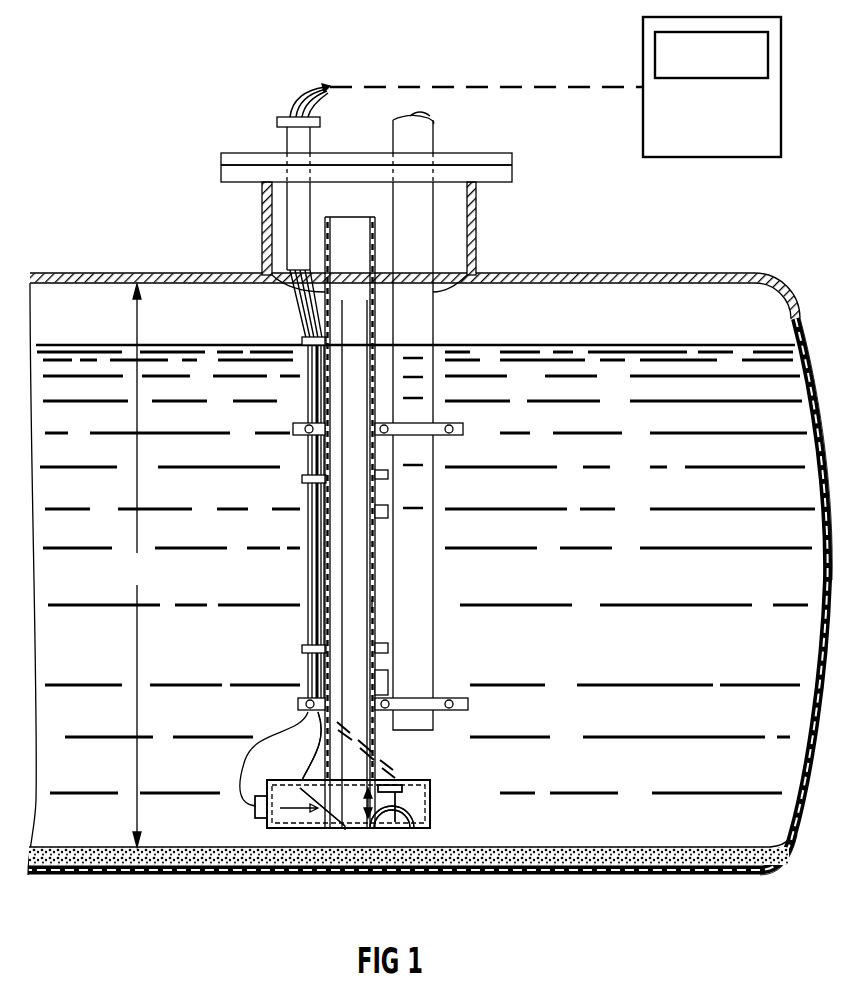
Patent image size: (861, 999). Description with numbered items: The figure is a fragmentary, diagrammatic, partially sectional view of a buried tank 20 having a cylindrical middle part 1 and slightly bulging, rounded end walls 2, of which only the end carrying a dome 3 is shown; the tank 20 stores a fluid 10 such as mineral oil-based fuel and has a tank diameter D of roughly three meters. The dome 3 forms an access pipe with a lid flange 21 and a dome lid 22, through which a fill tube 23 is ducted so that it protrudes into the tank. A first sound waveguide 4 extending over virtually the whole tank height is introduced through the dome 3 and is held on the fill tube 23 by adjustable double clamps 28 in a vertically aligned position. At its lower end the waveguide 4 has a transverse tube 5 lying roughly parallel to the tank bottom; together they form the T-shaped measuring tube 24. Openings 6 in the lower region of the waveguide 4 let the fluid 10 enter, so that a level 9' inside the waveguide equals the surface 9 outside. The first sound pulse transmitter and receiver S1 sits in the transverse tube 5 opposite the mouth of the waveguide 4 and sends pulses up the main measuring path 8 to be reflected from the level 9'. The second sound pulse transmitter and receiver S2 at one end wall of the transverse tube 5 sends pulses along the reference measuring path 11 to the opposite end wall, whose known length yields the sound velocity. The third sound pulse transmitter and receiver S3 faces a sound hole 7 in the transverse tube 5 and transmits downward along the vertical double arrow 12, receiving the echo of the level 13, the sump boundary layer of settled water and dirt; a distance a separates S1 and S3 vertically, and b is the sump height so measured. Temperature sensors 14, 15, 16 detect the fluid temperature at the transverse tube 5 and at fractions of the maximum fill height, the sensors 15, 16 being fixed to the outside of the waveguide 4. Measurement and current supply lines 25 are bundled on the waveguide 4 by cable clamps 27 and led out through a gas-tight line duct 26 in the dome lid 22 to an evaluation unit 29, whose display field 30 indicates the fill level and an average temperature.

The cylindrical middle part 1 is at (172, 276).
The end wall 2 is at (805, 338).
The dome 3 is at (477, 229).
The first sound waveguide 4 is at (385, 320).
The transverse tube 5 is at (272, 792).
The openings 6 is at (322, 781).
The sound hole 7 is at (390, 830).
The main measuring path 8 is at (344, 493).
The level 9 is at (415, 324).
The level 9' is at (346, 324).
The fluid 10 is at (584, 590).
The reference measuring path 11 is at (305, 830).
The vertical double arrow 12 is at (412, 832).
The level 13 is at (578, 866).
The temperature sensor 14 is at (262, 808).
The temperature sensor 15 is at (389, 680).
The temperature sensor 16 is at (389, 512).
The tank 20 is at (781, 866).
The lid flange 21 is at (505, 176).
The dome lid 22 is at (495, 153).
The fill tube 23 is at (432, 122).
The measuring tube 24 is at (378, 605).
The measurement and current supply lines 25 is at (316, 85).
The line duct 26 is at (292, 145).
The cable clamps 27 is at (300, 440).
The adjustable double clamps 28 is at (464, 428).
The evaluation unit 29 is at (690, 148).
The display field 30 is at (665, 52).
The first sound pulse transmitter and receiver S1 is at (345, 830).
The second sound pulse transmitter and receiver S2 is at (428, 806).
The third sound pulse transmitter and receiver S3 is at (400, 775).
The tank diameter D is at (137, 565).
The distance a is at (364, 794).
The sump height b is at (797, 857).